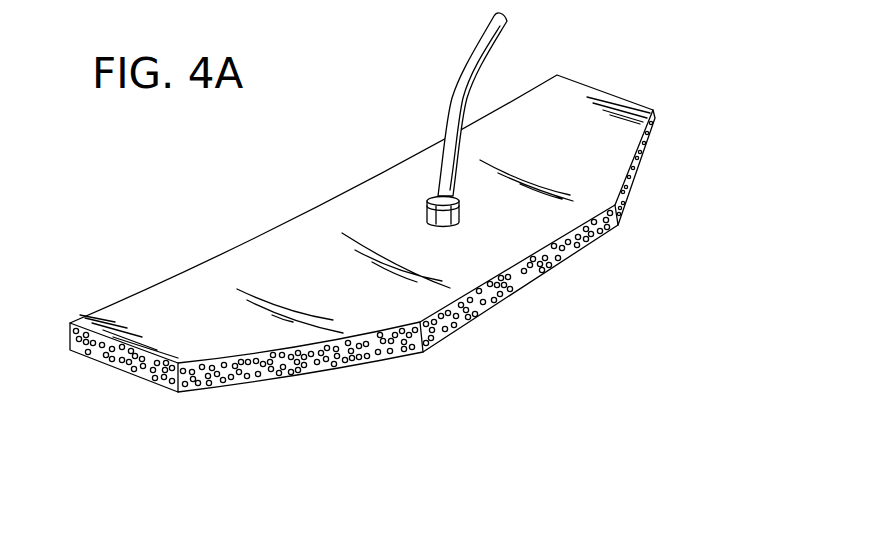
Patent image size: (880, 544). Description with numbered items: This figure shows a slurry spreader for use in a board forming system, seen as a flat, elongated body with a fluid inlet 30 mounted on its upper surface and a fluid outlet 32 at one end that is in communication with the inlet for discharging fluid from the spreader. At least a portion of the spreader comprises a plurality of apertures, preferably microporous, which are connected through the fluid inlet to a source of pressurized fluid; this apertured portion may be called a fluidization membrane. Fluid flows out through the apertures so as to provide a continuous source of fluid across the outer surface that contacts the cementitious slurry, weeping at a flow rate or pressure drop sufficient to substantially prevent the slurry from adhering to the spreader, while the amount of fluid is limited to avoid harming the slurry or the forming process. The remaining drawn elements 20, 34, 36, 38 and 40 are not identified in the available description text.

The inflatable pad 20 is at (393, 309).
The fluid inlet 30 is at (427, 215).
The fluid outlet 32 is at (648, 158).
The top surface 34 is at (207, 296).
The front side wall 36 is at (315, 372).
The perforations 38 is at (492, 297).
The hose 40 is at (456, 80).